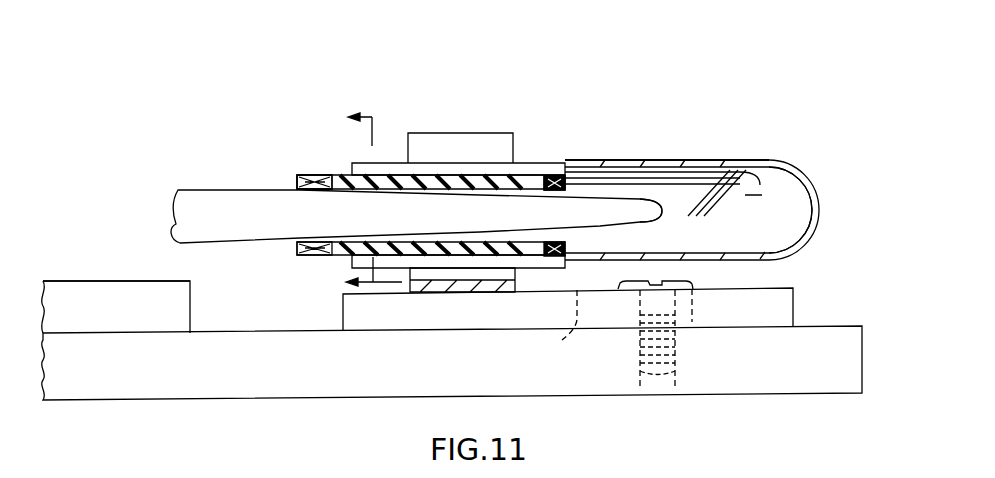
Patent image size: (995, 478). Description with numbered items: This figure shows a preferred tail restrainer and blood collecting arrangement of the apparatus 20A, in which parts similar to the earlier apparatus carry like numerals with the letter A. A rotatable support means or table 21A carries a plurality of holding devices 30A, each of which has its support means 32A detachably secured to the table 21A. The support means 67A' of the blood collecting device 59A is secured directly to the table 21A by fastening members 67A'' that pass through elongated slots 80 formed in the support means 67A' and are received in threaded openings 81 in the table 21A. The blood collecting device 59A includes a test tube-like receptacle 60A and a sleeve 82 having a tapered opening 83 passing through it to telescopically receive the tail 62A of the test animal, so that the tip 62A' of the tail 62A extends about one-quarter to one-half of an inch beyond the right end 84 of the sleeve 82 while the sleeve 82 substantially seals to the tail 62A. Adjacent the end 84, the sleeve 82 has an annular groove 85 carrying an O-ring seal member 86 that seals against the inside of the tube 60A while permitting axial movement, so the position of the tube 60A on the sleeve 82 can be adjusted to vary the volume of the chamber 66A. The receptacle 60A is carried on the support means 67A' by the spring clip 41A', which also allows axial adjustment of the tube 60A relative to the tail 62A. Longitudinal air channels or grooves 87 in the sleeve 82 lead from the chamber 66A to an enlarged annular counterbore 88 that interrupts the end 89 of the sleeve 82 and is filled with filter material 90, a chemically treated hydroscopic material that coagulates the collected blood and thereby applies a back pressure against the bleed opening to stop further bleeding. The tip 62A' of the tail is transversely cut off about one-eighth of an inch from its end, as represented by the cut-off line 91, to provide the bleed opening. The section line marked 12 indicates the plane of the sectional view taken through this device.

The method and apparatus 20A is at (612, 62).
The rotatable support means or table 21A is at (790, 376).
The holding devices 30A is at (76, 281).
The support means 32A is at (138, 292).
The spring clip 41A' is at (416, 156).
The blood collecting device 59A is at (655, 147).
The test tube-like receptacle 60A is at (776, 160).
The tail 62A is at (663, 164).
The tip of the tail 62A' is at (702, 172).
The chamber 66A is at (788, 203).
The support means 67A' is at (613, 308).
The fastening members 67A'' is at (702, 277).
The elongated slots 80 is at (566, 322).
The threaded openings 81 is at (677, 362).
The sleeve 82 is at (460, 248).
The tapered opening 83 is at (455, 136).
The right end of the sleeve 84 is at (566, 248).
The annular groove 85 is at (550, 184).
The O-ring seal member 86 is at (552, 177).
The longitudinal air channels or grooves 87 is at (417, 184).
The enlarged annular counterbore 88 is at (316, 180).
The end of the sleeve 89 is at (301, 179).
The filter material 90 is at (300, 250).
The cut-off line 91 is at (660, 213).
The section line 12 is at (357, 202).